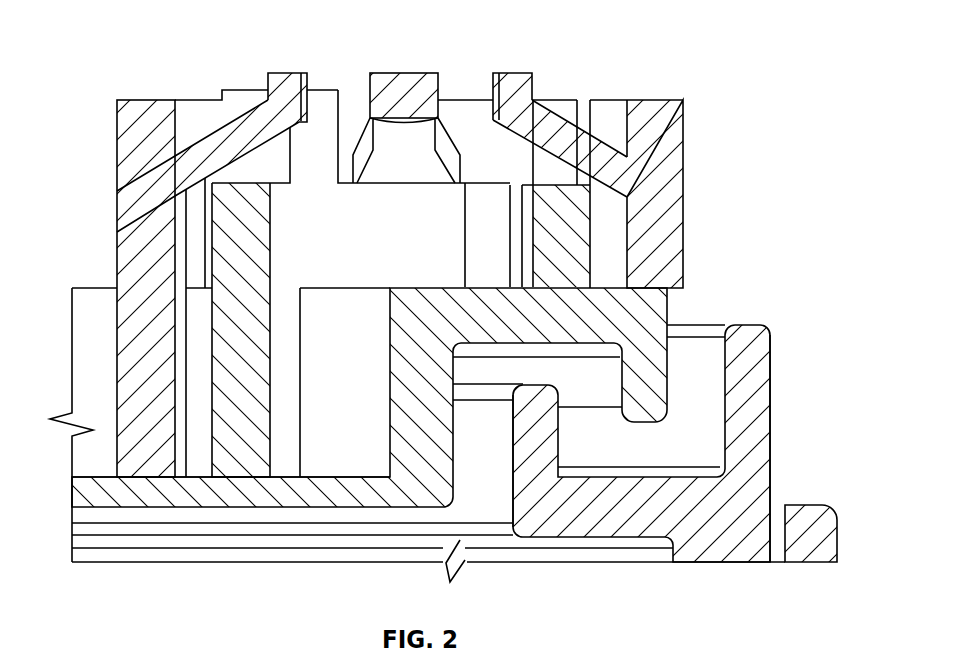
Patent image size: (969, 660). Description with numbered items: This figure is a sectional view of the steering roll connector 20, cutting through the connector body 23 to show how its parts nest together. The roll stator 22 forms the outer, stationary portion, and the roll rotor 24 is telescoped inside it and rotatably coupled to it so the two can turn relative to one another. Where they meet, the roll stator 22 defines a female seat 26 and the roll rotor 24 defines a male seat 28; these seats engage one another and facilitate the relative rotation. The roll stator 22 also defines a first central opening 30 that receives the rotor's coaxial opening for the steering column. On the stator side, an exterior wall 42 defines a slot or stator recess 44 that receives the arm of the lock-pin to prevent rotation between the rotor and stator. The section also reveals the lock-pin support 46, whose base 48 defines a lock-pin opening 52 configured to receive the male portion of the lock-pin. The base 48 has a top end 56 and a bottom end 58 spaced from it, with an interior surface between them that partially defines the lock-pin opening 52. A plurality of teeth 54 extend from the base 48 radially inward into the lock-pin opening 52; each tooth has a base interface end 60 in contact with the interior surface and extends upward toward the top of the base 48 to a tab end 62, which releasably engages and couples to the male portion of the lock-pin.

The steering roll connector 20 is at (728, 55).
The roll stator 22 is at (745, 388).
The valve body 23 is at (72, 387).
The roll rotor 24 is at (632, 335).
The female seat 26 is at (722, 408).
The male seat 28 is at (610, 372).
The first central opening 30 is at (513, 487).
The exterior wall 42 is at (772, 430).
The stator recess 44 is at (812, 512).
The lock-pin support 46 is at (102, 85).
The base 48 is at (142, 210).
The lock-pin opening 52 is at (620, 115).
The teeth 54 is at (500, 68).
The top end 56 is at (147, 100).
The bottom end 58 is at (143, 478).
The base interface end 60 is at (193, 163).
The tab end 62 is at (280, 92).